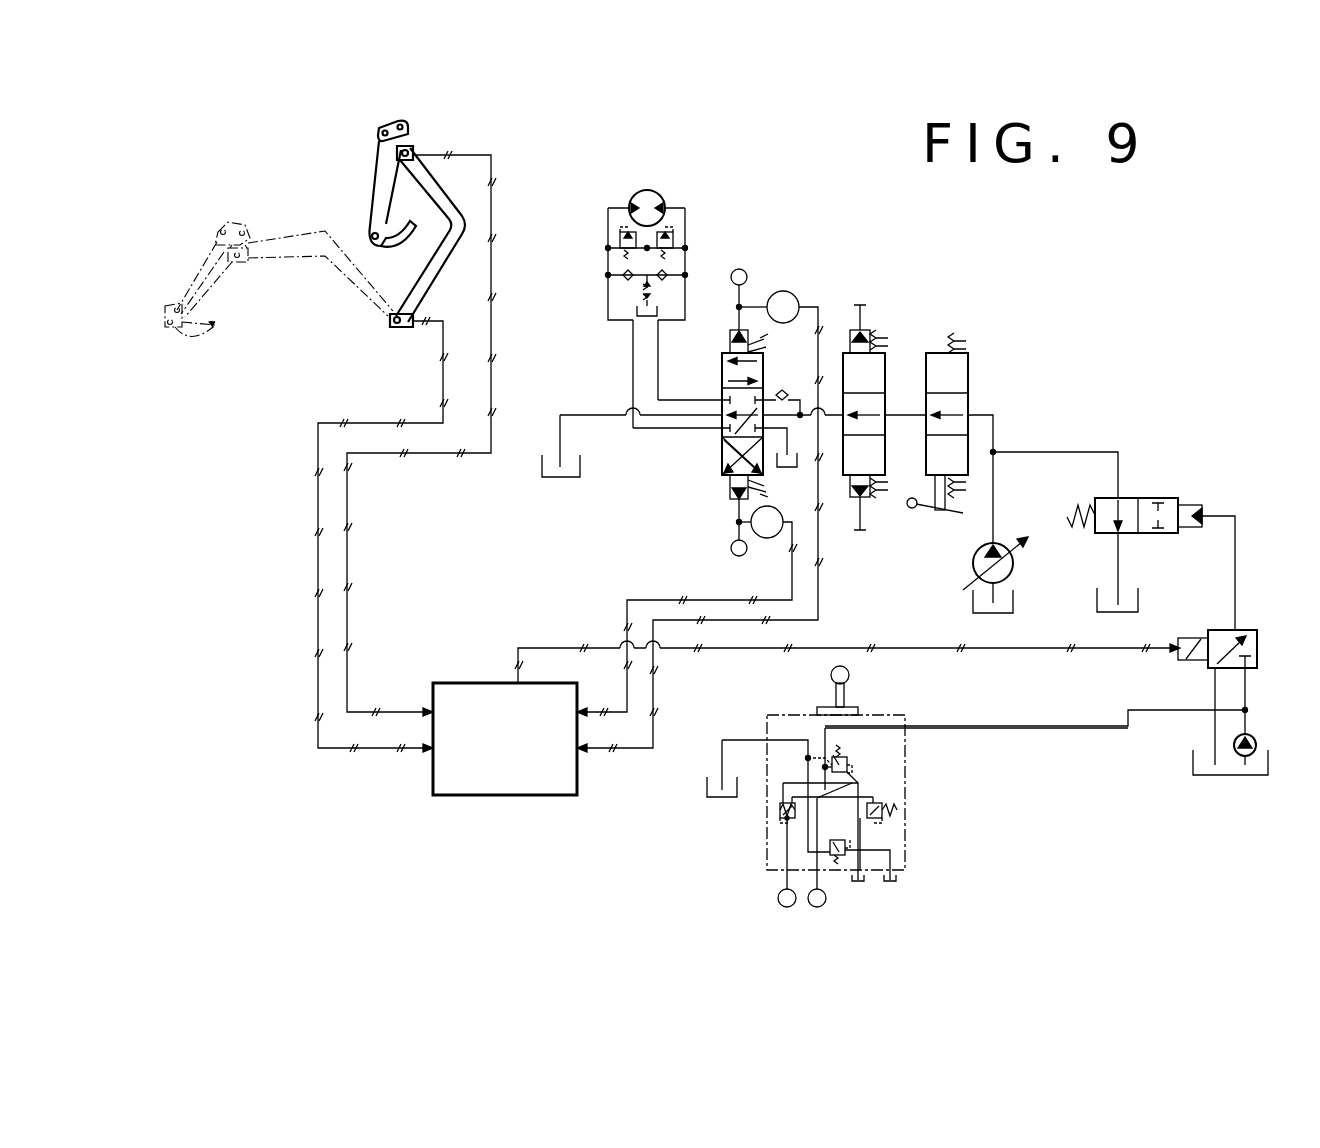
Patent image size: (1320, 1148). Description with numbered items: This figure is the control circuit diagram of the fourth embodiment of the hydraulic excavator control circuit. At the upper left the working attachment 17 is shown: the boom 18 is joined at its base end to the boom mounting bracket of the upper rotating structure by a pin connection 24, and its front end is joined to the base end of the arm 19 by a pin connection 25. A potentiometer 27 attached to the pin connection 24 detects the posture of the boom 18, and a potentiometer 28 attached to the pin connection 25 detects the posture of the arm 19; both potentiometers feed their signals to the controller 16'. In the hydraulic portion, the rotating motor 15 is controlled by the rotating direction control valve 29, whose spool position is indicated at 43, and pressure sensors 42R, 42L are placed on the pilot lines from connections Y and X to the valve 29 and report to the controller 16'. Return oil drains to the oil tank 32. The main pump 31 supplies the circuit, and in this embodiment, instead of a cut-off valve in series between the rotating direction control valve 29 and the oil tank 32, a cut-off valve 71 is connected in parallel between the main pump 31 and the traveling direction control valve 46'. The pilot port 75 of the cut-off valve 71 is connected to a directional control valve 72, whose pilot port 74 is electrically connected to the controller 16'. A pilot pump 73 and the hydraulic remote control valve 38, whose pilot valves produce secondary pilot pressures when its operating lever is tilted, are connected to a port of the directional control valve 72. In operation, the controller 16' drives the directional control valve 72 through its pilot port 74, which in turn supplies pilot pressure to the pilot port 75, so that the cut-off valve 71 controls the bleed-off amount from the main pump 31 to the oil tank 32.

The working attachment 17 is at (360, 132).
The arm 19 is at (370, 195).
The boom 18 is at (437, 274).
The pin connection 25 is at (409, 147).
The potentiometer 28 is at (416, 153).
The pin connection 24 is at (390, 327).
The potentiometer 27 is at (405, 330).
The controller 16' is at (806, 746).
The rotating motor 15 is at (648, 190).
The rotating direction control valve 29 is at (722, 362).
The valve spool position 43 is at (720, 441).
The right pressure sensor 42R is at (798, 297).
The left pressure sensor 42L is at (795, 498).
The oil tank 32 is at (553, 480).
The traveling direction control valve 46' is at (1012, 430).
The main pump 31 is at (973, 560).
The cut-off valve 71 is at (1134, 484).
The pilot port 75 is at (1201, 507).
The directional control valve 72 is at (1256, 626).
The pilot port 74 is at (1180, 661).
The pilot pump 73 is at (1256, 737).
The hydraulic remote control valve 38 is at (888, 703).